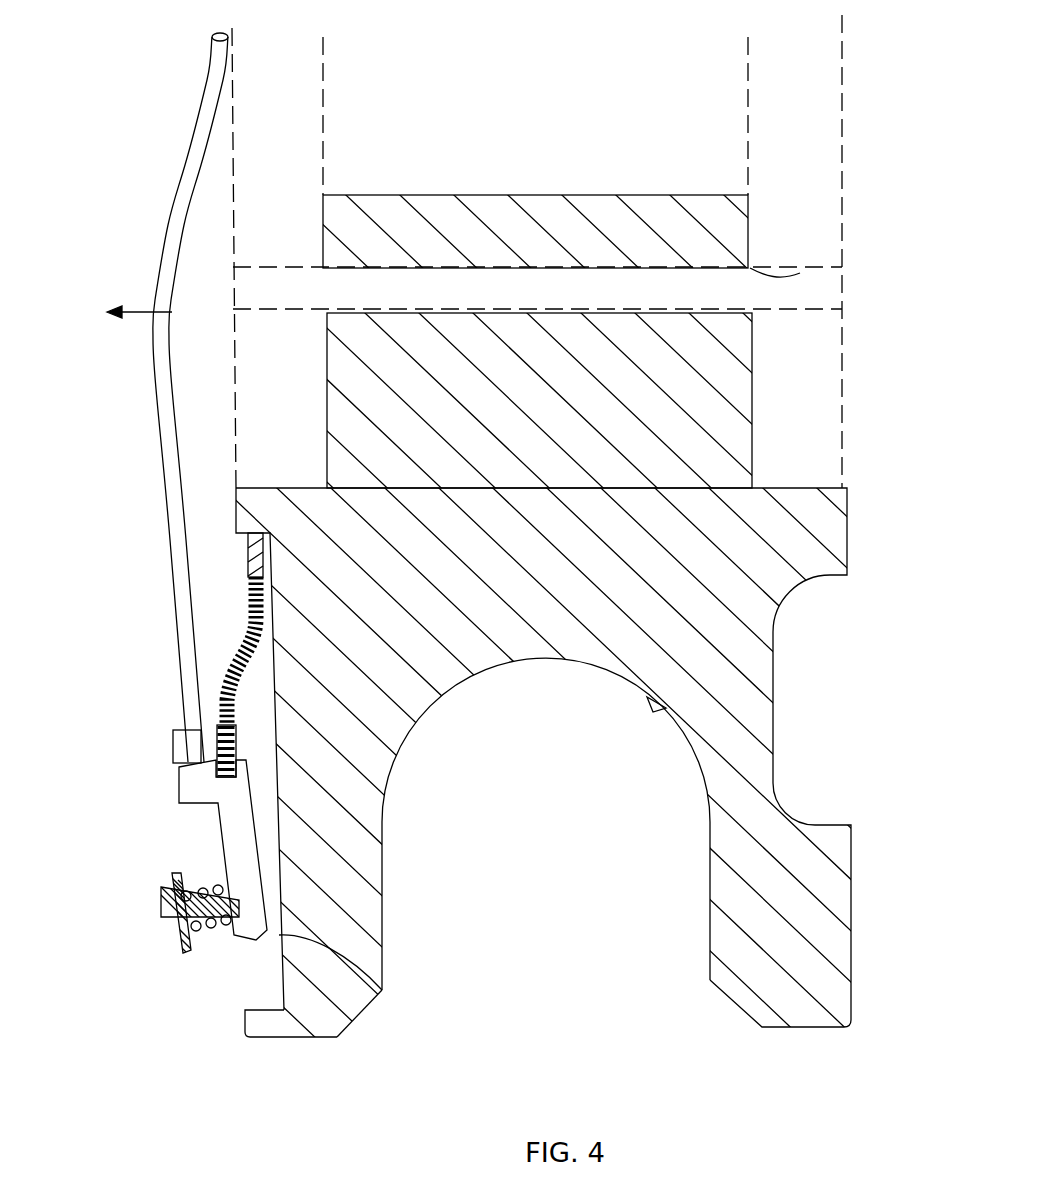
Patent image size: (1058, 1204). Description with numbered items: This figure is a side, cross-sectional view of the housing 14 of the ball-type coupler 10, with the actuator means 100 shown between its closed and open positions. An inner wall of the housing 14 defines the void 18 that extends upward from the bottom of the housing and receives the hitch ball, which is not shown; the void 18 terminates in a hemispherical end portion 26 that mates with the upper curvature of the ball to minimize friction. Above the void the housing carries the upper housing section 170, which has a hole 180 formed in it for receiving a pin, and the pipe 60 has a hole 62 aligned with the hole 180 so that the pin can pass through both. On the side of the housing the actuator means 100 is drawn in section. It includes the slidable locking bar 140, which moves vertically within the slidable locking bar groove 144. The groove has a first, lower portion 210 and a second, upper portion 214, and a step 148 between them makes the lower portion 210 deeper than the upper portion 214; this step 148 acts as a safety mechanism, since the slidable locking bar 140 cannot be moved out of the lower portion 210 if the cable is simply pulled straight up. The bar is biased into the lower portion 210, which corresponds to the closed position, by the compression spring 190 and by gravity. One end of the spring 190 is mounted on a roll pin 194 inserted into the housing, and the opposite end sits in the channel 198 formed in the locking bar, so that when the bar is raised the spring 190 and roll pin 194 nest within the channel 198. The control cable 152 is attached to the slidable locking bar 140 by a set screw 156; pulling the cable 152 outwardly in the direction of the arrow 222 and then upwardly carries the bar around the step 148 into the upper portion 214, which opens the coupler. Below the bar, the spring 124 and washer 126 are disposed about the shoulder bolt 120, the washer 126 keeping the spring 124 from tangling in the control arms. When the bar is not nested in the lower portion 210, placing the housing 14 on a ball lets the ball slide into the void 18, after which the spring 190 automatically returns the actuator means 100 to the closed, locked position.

The ball-type coupler 10 is at (883, 354).
The housing 14 is at (825, 527).
The void 18 is at (552, 838).
The hemispherical end portion 26 is at (655, 712).
The pipe 60 is at (812, 168).
The hole 62 is at (273, 290).
The actuator means 100 is at (152, 742).
The shoulder bolt 120 is at (162, 912).
The spring 124 is at (212, 935).
The washer 126 is at (176, 877).
The slidable locking bar 140 is at (216, 802).
The slidable locking bar groove 144 is at (245, 993).
The step 148 is at (275, 793).
The control cable 152 is at (178, 216).
The set screw 156 is at (201, 760).
The upper housing section 170 is at (722, 378).
The hole 180 is at (752, 267).
The compression spring 190 is at (250, 655).
The roll pin 194 is at (250, 553).
The channel 198 is at (222, 777).
The first, lower portion 210 is at (367, 990).
The second, upper portion 214 is at (252, 587).
The arrow 222 is at (120, 312).